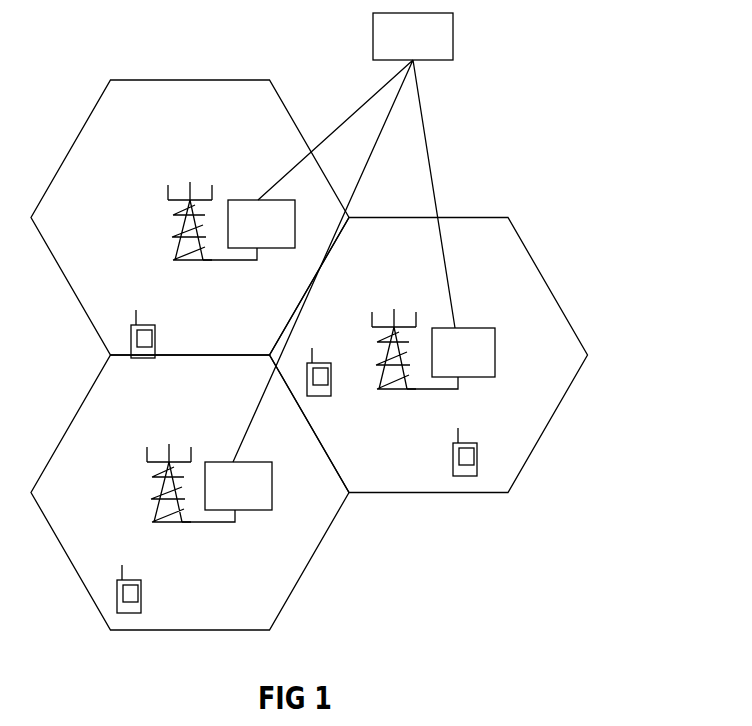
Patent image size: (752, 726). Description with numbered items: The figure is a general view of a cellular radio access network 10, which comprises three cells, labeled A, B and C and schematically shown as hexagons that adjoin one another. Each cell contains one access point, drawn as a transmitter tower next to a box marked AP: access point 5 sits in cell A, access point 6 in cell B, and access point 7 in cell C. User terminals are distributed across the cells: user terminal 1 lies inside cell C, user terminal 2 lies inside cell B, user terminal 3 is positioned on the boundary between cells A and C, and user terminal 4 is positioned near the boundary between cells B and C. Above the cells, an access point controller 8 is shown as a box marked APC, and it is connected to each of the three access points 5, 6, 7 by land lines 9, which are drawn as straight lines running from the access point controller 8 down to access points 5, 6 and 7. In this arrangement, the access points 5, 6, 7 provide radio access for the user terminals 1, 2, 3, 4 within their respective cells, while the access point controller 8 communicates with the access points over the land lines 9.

The user terminal 1 is at (133, 612).
The user terminal 2 is at (473, 477).
The user terminal 3 is at (150, 358).
The user terminal 4 is at (325, 395).
The access point 5 is at (248, 198).
The access point 6 is at (492, 328).
The access point 7 is at (265, 462).
The access point controller 8 is at (455, 43).
The land lines 9 is at (428, 150).
The wireless communication system 10 is at (562, 86).